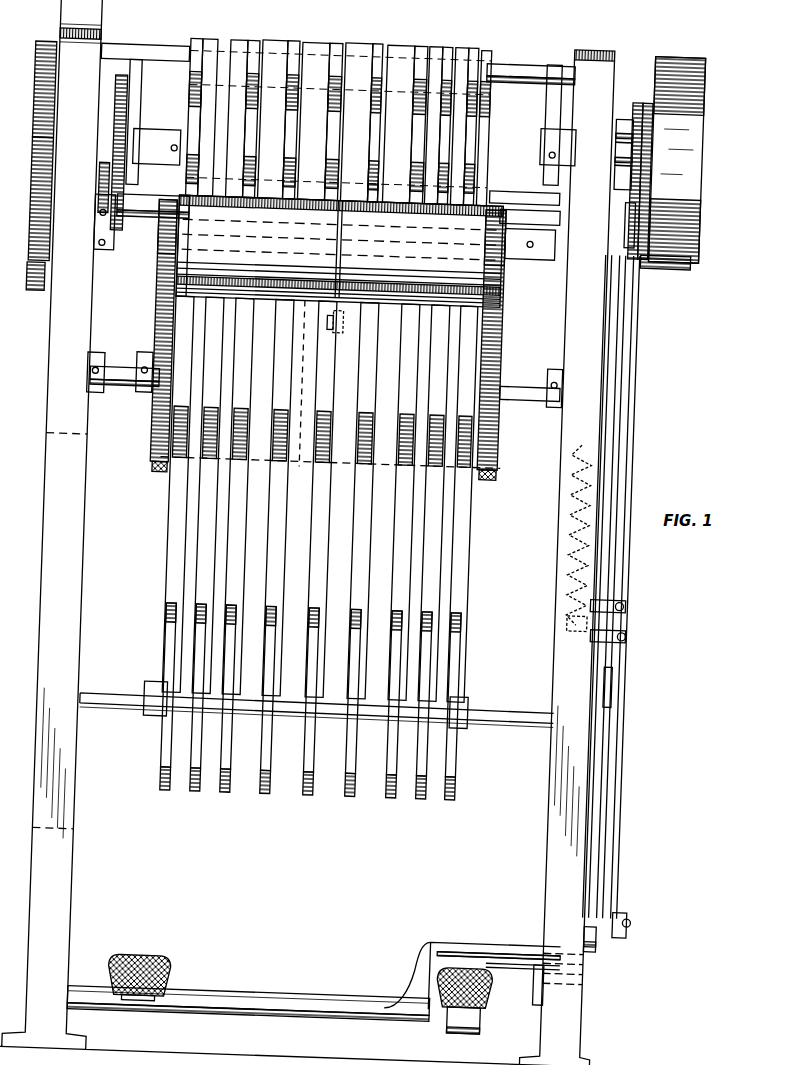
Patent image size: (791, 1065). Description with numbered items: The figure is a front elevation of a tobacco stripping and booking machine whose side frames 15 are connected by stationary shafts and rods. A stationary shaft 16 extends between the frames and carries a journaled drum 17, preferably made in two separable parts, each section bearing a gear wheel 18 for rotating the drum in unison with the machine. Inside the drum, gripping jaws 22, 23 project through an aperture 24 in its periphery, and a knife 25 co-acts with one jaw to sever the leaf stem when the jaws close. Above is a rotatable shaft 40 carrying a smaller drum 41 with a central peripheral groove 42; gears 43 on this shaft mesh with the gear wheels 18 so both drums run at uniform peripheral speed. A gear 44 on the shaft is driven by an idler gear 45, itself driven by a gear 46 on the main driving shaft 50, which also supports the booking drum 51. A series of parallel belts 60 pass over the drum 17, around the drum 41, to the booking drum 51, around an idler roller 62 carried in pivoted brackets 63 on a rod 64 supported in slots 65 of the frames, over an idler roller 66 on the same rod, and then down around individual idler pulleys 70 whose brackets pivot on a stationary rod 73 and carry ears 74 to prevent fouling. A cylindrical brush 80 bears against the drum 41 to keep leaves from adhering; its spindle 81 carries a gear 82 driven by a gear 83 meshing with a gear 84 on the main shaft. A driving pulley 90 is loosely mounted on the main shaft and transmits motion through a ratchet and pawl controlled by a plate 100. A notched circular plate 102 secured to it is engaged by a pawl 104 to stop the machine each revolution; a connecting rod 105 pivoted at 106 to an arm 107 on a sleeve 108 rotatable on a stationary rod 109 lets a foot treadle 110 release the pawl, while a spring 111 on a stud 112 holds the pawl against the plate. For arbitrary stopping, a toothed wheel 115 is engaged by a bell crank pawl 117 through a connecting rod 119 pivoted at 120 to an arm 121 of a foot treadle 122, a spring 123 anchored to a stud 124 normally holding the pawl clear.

The side frames 15 is at (557, 660).
The stationary shaft 16 is at (120, 382).
The drum 17 is at (163, 472).
The gear wheel 18 is at (150, 428).
The gripping jaw 22 is at (335, 332).
The gripping jaw 23 is at (322, 328).
The aperture 24 is at (298, 322).
The knife 25 is at (320, 262).
The rotatable shaft 40 is at (520, 280).
The drum 41 is at (158, 290).
The peripheral groove 42 is at (405, 260).
The gears 43 is at (160, 262).
The gear 44 is at (35, 290).
The idler gear 45 is at (33, 190).
The gear 46 is at (35, 85).
The main driving shaft 50 is at (155, 140).
The booking drum 51 is at (478, 117).
The belts 60 is at (258, 40).
The idler roller 62 is at (375, 190).
The pivoted brackets 63 is at (128, 92).
The rod 64 is at (505, 68).
The slots 65 is at (72, 30).
The idler roller 66 is at (335, 45).
The idler pulleys 70 is at (205, 728).
The stationary rod 73 is at (512, 724).
The ears 74 is at (178, 793).
The cylindrical brush 80 is at (500, 200).
The spindle 81 is at (138, 212).
The gear 82 is at (102, 202).
The gear 83 is at (110, 170).
The gear 84 is at (113, 88).
The driving pulley 90 is at (688, 58).
The plate 100 is at (650, 130).
The circular plate 102 is at (640, 140).
The pawl 104 is at (670, 275).
The connecting rod 105 is at (638, 445).
The pivot 106 is at (625, 925).
The arm 107 is at (495, 947).
The sleeve 108 is at (248, 1001).
The stationary rod 109 is at (95, 1010).
The foot treadle 110 is at (158, 957).
The spring 111 is at (568, 622).
The stud 112 is at (628, 632).
The toothed wheel 115 is at (630, 168).
The bell crank pawl 117 is at (635, 215).
The connecting rod 119 is at (620, 690).
The pivot 120 is at (590, 935).
The arm 121 is at (540, 985).
The foot treadle 122 is at (495, 990).
The spring 123 is at (567, 530).
The stud 124 is at (628, 600).